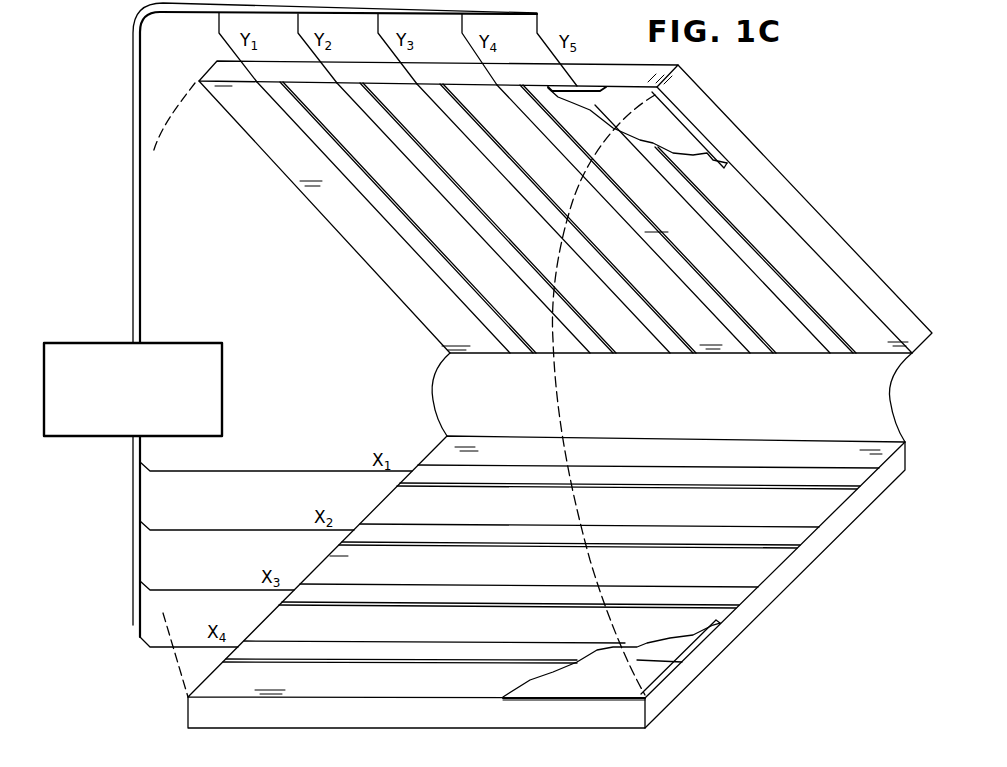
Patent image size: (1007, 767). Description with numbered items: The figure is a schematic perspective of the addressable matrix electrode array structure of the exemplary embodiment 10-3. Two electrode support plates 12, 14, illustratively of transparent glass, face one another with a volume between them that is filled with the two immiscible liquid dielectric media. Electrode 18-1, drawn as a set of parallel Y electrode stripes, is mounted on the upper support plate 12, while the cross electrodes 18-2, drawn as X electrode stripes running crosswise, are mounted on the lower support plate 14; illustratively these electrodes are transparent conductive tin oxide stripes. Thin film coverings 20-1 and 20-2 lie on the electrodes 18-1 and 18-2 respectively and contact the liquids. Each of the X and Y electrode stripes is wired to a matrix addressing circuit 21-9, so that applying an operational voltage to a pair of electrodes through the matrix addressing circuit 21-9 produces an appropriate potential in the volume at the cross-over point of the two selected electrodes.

The display device 10-3 is at (802, 117).
The electrode support plate 12 is at (813, 215).
The electrode support plate 14 is at (723, 640).
The electrode 18-1 is at (298, 122).
The cross electrodes 18-2 is at (430, 470).
The covering 20-1 is at (667, 118).
The covering 20-2 is at (653, 683).
The matrix addressing circuit 21-9 is at (83, 352).